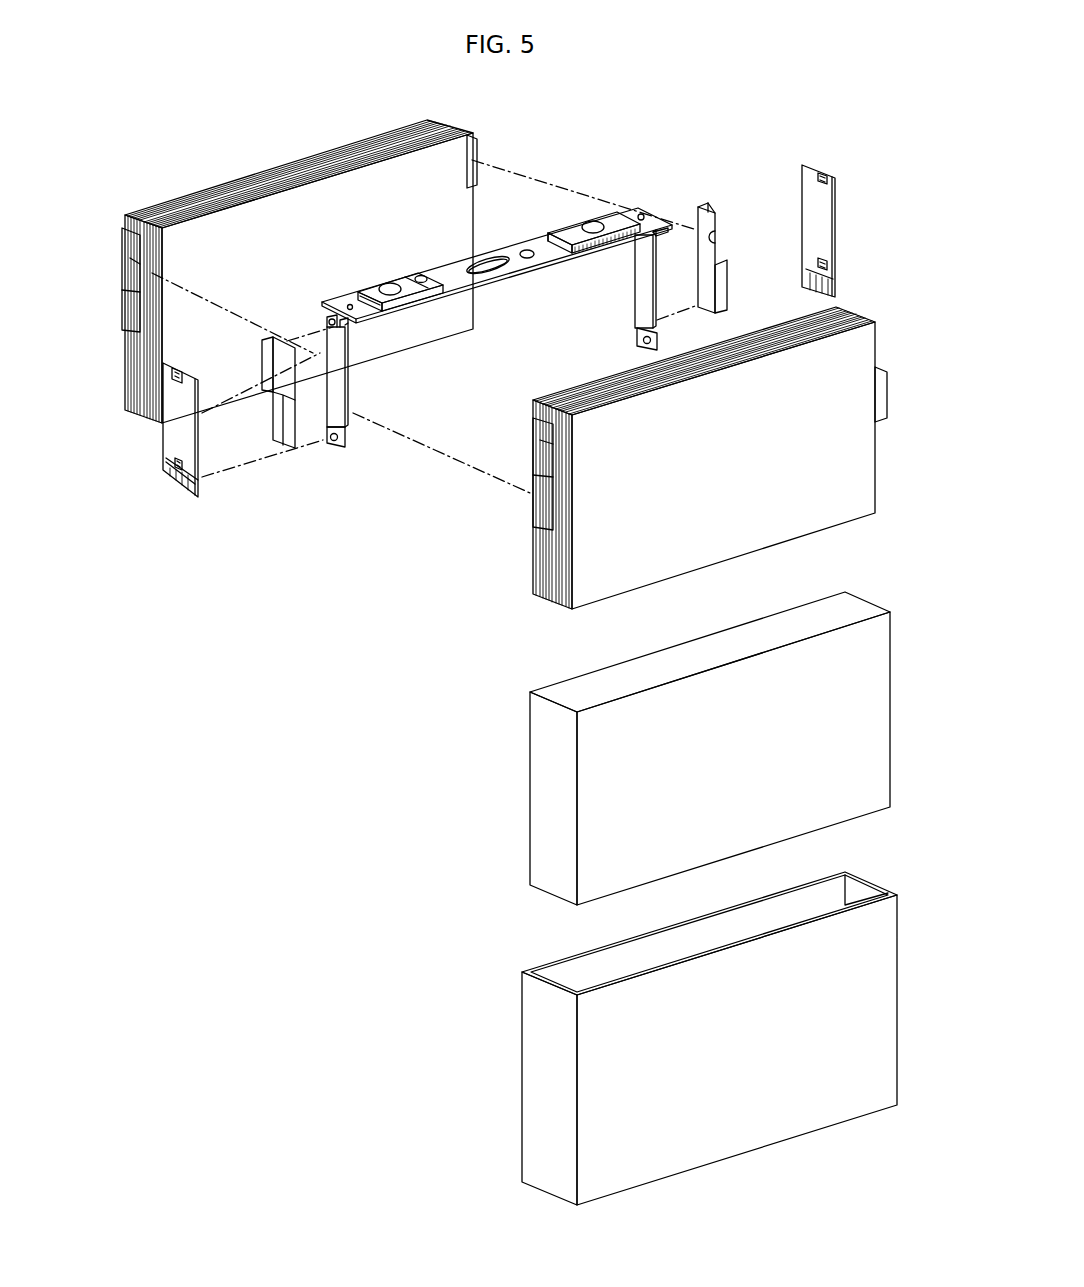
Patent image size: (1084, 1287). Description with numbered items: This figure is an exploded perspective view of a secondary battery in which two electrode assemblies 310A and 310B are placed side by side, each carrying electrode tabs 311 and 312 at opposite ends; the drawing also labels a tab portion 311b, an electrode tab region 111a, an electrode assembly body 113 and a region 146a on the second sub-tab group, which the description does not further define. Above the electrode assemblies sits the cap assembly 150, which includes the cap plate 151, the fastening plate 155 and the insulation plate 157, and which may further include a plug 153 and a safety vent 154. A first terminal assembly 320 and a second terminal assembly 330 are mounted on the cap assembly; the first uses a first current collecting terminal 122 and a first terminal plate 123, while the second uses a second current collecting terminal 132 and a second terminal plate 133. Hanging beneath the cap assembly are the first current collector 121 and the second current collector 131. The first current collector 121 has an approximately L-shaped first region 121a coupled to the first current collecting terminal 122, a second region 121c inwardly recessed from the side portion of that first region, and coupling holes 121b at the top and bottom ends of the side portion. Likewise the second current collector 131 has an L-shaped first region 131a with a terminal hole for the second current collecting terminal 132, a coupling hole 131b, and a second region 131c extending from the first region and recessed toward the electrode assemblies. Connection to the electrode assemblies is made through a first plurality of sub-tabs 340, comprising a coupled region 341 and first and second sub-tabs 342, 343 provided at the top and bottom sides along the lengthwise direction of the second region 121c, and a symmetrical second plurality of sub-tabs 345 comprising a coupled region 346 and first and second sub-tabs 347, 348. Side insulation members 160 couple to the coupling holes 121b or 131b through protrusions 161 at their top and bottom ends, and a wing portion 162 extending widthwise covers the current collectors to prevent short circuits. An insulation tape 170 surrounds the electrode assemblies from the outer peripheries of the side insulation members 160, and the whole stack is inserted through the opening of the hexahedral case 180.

The electrode assembly 310A is at (458, 116).
The electrode assembly 310B is at (737, 433).
The electrode tab 311 is at (296, 382).
The terminal portion 311b is at (130, 253).
The electrode tab 111a is at (130, 316).
The electrode tab 312 is at (897, 400).
The cell case 113 is at (866, 472).
The insulation tape 170 is at (880, 722).
The case 180 is at (887, 1008).
The cap assembly 150 is at (491, 230).
The cap plate 151 is at (449, 266).
The plug 153 is at (526, 251).
The safety vent 154 is at (473, 258).
The fastening plate 155 is at (414, 272).
The insulation plate 157 is at (550, 235).
The first terminal assembly 320 is at (376, 260).
The first current collecting terminal 122 is at (389, 284).
The first terminal plate 123 is at (360, 290).
The second terminal assembly 330 is at (582, 195).
The second current collecting terminal 132 is at (597, 223).
The second terminal plate 133 is at (640, 214).
The first current collector 121 is at (343, 368).
The first region 121a is at (347, 332).
The coupling holes 121b is at (330, 318).
The second region 121c is at (339, 397).
The second current collector 131 is at (625, 261).
The first region 131a is at (658, 238).
The coupling hole 131b is at (643, 338).
The second region 131c is at (643, 292).
The side insulation member 160 is at (502, 330).
The protrusions 161 is at (173, 371).
The wing portion 162 is at (190, 446).
The first plurality of sub-tabs 340 is at (223, 305).
The coupled region 341 is at (277, 421).
The first sub-tab 342 is at (266, 364).
The second sub-tab 343 is at (292, 450).
The second plurality of sub-tabs 345 is at (495, 209).
The coupled region 346 is at (709, 302).
The first sub-tab 347 is at (725, 272).
The second sub-tab 348 is at (708, 201).
The terminal groove 146a is at (718, 240).